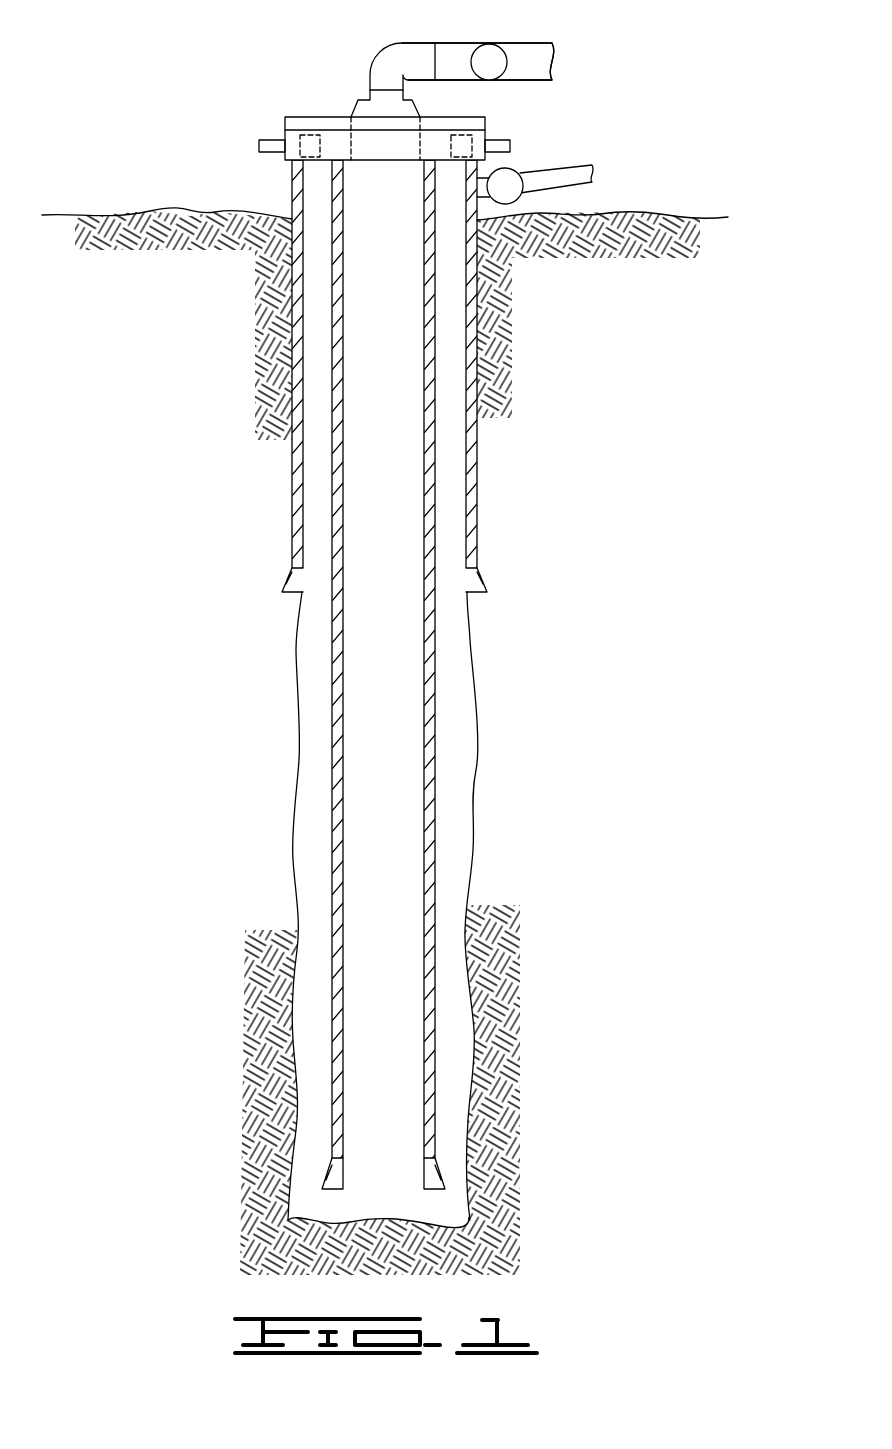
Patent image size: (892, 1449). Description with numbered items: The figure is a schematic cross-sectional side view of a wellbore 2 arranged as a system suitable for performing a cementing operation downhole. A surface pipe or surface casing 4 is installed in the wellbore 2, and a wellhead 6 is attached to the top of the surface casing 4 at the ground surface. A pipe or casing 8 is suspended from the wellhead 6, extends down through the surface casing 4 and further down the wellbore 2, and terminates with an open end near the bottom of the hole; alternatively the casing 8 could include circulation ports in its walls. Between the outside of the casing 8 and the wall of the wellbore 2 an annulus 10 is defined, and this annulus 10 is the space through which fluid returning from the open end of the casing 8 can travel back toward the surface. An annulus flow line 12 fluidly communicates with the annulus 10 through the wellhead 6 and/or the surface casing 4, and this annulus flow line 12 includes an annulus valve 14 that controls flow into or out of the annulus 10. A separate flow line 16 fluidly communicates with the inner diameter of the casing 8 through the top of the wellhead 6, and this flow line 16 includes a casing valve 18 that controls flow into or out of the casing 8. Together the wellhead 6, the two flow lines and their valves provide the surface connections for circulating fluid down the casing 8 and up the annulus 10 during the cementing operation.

The wellbore 2 is at (292, 803).
The surface casing 4 is at (292, 537).
The wellhead 6 is at (285, 128).
The casing 8 is at (435, 875).
The annulus 10 is at (455, 633).
The annulus flow line 12 is at (587, 188).
The annulus valve 14 is at (500, 170).
The flow line 16 is at (548, 80).
The casing valve 18 is at (492, 55).